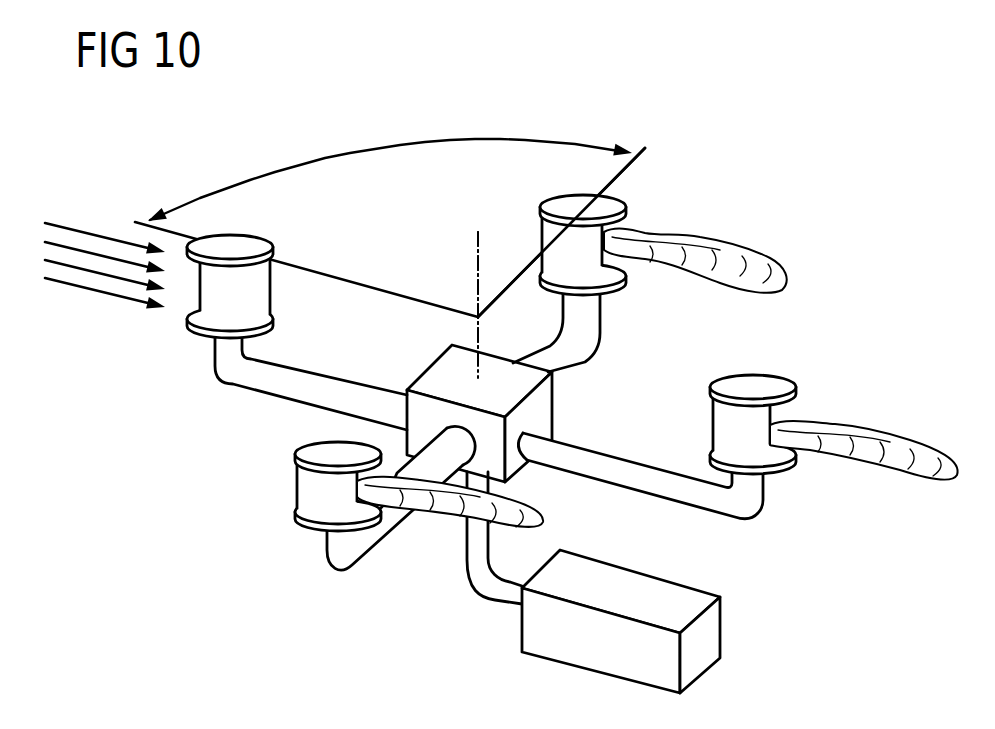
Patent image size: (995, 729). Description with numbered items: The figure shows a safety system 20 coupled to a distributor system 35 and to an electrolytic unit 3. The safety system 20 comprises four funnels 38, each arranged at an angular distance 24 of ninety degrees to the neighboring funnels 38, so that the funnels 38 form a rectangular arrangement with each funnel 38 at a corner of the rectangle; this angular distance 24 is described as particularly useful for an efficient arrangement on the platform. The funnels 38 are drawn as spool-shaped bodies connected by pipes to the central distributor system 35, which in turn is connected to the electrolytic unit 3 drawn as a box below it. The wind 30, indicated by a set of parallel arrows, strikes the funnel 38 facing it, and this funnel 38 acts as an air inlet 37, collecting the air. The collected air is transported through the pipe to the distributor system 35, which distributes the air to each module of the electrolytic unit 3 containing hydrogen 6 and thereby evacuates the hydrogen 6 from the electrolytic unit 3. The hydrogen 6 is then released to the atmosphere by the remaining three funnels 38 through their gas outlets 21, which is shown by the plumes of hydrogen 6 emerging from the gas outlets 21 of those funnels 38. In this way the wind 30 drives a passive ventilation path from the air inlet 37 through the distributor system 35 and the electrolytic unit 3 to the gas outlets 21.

The electrolytic unit 3 is at (740, 570).
The hydrogen 6 is at (784, 279).
The safety system 20 is at (827, 157).
The gas outlet 21 is at (617, 230).
The angular distance 24 is at (372, 145).
The wind 30 is at (83, 232).
The distributor system 35 is at (587, 397).
The air inlet 37 is at (193, 295).
The funnel 38 is at (491, 381).